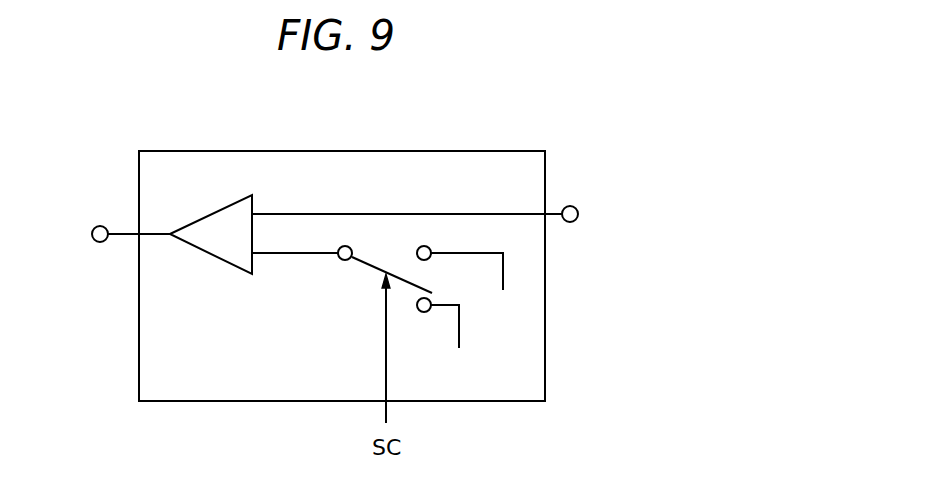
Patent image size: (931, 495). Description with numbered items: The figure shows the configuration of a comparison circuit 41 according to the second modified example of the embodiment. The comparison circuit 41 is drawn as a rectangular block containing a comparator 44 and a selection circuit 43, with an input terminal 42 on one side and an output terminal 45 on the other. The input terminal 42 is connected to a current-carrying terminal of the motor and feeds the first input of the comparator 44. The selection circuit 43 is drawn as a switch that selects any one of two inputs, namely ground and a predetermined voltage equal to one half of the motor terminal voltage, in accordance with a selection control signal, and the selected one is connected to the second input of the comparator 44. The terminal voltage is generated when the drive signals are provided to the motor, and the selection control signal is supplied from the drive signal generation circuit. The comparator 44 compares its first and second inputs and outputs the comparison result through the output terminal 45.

The comparison circuit 41 is at (471, 151).
The input terminal 42 is at (568, 207).
The selection circuit 43 is at (365, 298).
The comparator 44 is at (200, 220).
The output terminal 45 is at (100, 226).